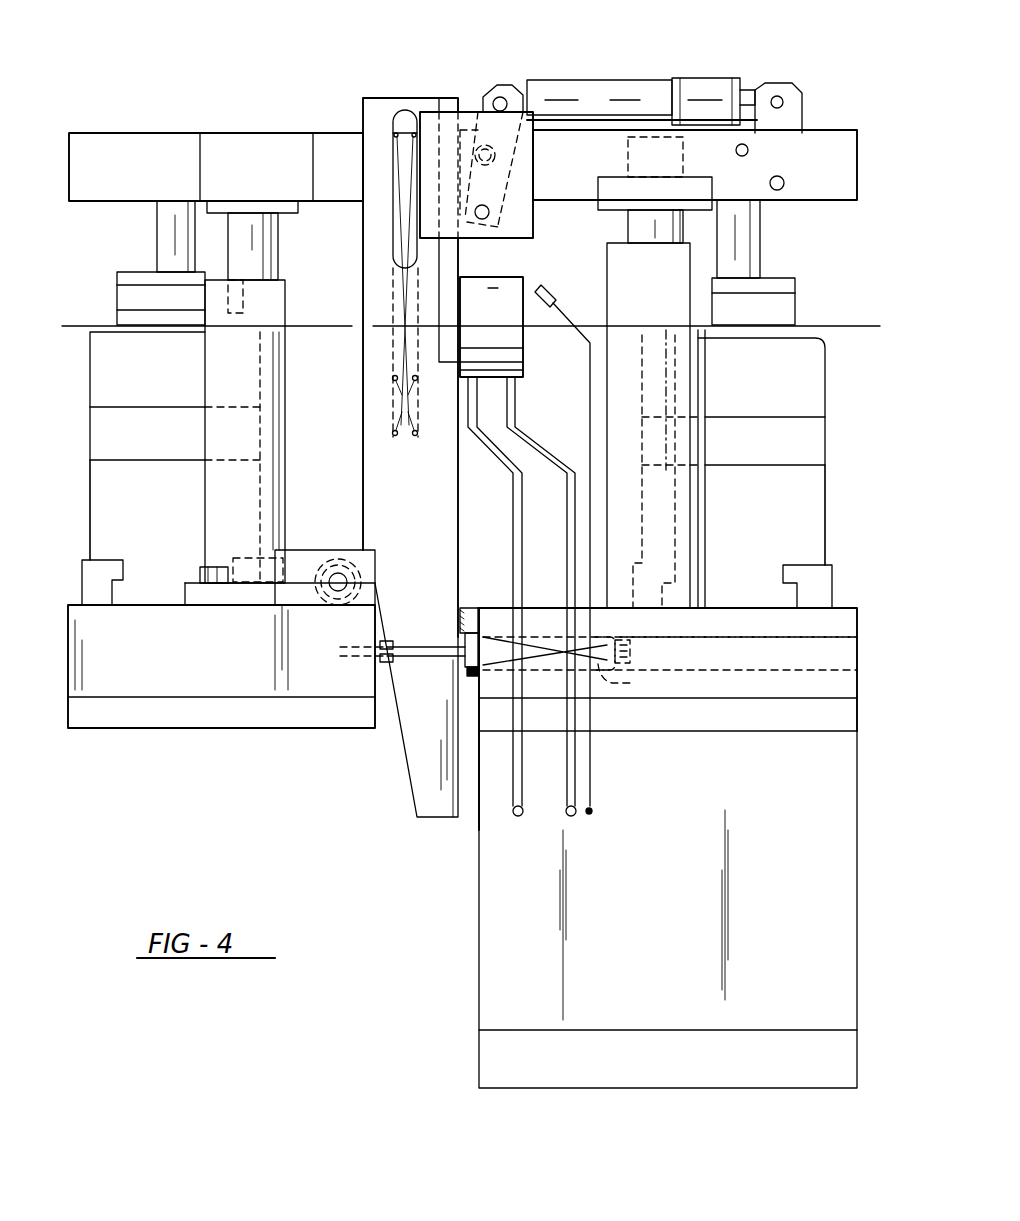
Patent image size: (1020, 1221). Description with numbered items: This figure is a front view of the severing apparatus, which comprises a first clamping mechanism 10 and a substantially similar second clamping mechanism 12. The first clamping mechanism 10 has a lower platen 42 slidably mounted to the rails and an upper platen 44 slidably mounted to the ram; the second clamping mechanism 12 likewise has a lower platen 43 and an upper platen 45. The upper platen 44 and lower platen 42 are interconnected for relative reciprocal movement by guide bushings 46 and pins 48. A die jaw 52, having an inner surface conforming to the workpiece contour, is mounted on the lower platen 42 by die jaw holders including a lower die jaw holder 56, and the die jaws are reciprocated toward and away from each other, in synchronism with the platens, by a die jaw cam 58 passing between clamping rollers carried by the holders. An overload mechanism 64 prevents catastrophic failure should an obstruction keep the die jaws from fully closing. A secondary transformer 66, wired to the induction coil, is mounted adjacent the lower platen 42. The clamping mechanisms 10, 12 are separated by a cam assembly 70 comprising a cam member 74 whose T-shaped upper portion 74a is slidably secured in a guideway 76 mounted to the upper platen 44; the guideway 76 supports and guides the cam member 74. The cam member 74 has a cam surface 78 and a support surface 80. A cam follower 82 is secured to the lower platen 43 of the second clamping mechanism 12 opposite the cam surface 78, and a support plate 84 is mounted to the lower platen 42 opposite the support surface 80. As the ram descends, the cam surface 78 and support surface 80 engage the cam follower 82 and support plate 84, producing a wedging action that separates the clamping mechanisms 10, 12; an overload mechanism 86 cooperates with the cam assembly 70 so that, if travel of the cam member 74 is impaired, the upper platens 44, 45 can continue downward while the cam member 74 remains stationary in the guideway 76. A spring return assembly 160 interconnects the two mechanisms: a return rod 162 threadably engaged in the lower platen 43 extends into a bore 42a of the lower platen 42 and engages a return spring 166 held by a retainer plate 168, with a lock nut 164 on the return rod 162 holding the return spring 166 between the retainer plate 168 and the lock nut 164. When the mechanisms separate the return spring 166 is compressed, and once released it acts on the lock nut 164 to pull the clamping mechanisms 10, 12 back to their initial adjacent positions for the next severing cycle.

The first clamping mechanism 10 is at (778, 527).
The second clamping mechanism 12 is at (147, 517).
The lower platen 42 is at (845, 630).
The bore 42a is at (733, 645).
The lower platen 43 is at (140, 683).
The upper platen 44 is at (842, 168).
The upper platen 45 is at (112, 152).
The guide bushings 46 is at (284, 290).
The pins 48 is at (270, 243).
The die jaw 52 is at (108, 370).
The lower die jaw holder 56 is at (107, 500).
The die jaw cam 58 is at (170, 238).
The overload mechanism 64 is at (515, 342).
The secondary transformer 66 is at (512, 953).
The cam assembly 70 is at (470, 108).
The cam member 74 is at (375, 478).
The T-shaped upper portion 74a is at (452, 264).
The guideway 76 is at (530, 220).
The cam surface 78 is at (405, 768).
The support surface 80 is at (470, 790).
The cam follower 82 is at (332, 600).
The support plate 84 is at (292, 566).
The overload mechanism 86 is at (604, 76).
The spring return assembly 160 is at (598, 642).
The return rod 162 is at (413, 642).
The lock nut 164 is at (640, 652).
The return spring 166 is at (620, 686).
The retainer plate 168 is at (470, 674).